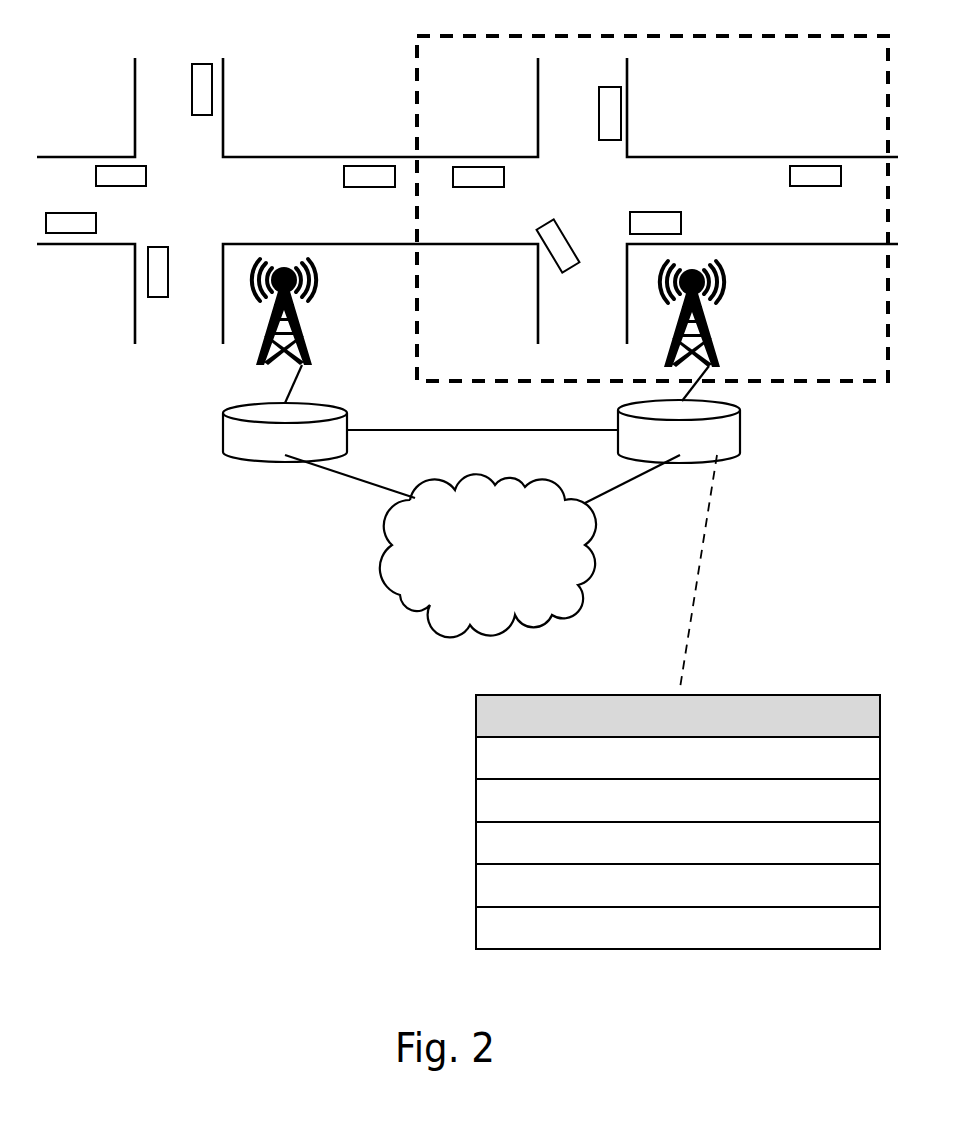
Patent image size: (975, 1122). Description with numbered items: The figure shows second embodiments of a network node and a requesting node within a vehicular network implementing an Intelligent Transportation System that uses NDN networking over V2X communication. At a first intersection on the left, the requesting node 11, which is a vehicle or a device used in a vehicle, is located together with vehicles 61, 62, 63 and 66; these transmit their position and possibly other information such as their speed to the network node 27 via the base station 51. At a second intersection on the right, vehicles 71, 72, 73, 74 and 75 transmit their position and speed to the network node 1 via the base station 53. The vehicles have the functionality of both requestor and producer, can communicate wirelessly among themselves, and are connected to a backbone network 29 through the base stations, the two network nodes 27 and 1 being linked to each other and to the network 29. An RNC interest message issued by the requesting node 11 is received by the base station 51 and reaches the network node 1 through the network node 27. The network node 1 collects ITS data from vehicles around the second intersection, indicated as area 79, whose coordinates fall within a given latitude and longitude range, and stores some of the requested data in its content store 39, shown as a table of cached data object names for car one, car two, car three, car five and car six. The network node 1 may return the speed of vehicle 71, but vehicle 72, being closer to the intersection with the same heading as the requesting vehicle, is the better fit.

The network node 1 is at (679, 431).
The requesting node 11 is at (63, 233).
The network node 27 is at (285, 432).
The backbone network 29 is at (488, 555).
The content store 39 is at (852, 716).
The base station 51 is at (300, 330).
The base station 53 is at (708, 332).
The vehicle 61 is at (118, 164).
The vehicle 62 is at (157, 297).
The vehicle 63 is at (212, 78).
The vehicle 66 is at (384, 165).
The vehicle 71 is at (818, 165).
The vehicle 72 is at (681, 218).
The vehicle 73 is at (621, 110).
The vehicle 74 is at (566, 271).
The vehicle 75 is at (468, 165).
The area 79 is at (652, 208).